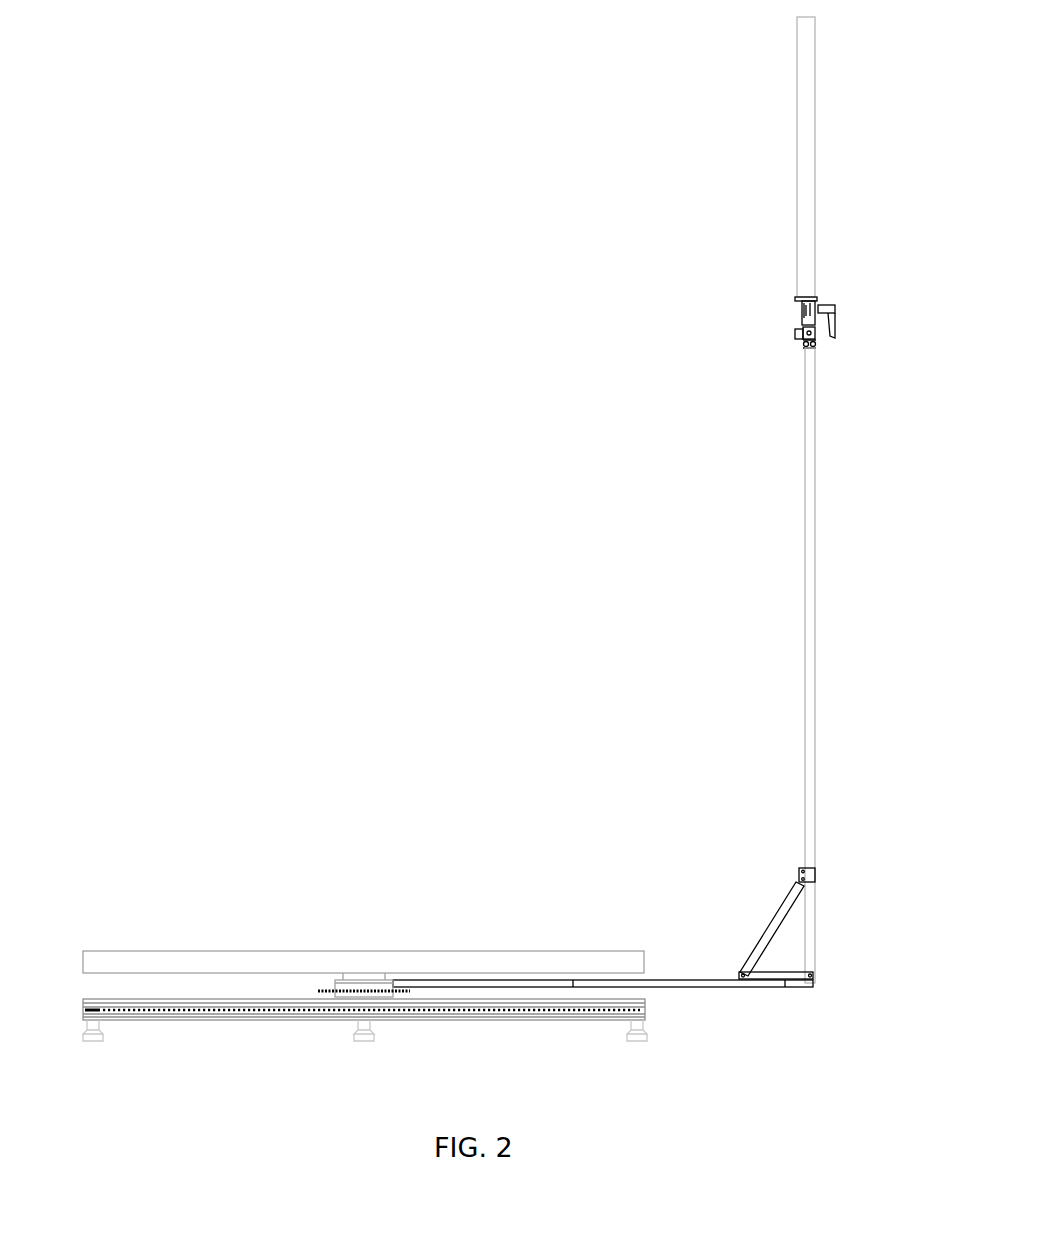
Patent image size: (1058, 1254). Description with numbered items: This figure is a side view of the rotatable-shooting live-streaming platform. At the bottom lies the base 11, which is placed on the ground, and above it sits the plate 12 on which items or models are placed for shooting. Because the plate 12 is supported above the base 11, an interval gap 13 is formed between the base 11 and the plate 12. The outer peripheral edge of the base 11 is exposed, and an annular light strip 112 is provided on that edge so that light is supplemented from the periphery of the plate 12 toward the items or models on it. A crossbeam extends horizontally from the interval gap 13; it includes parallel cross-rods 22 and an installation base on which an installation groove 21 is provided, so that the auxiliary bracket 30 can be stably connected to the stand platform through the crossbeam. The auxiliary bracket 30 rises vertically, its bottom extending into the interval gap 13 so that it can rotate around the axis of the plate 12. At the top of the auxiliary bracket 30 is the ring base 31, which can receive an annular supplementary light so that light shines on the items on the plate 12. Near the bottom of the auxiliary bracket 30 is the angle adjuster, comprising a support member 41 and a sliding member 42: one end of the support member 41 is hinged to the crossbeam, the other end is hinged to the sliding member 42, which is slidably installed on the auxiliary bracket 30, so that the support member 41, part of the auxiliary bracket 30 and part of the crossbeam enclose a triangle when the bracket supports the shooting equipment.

The base 11 is at (365, 1045).
The annular light strip 112 is at (525, 1010).
The plate 12 is at (130, 965).
The interval gap 13 is at (217, 990).
The installation groove 21 is at (782, 975).
The cross-rod 22 is at (688, 985).
The auxiliary bracket 30 is at (807, 405).
The ring base 31 is at (807, 238).
The support member 41 is at (788, 906).
The sliding member 42 is at (813, 870).